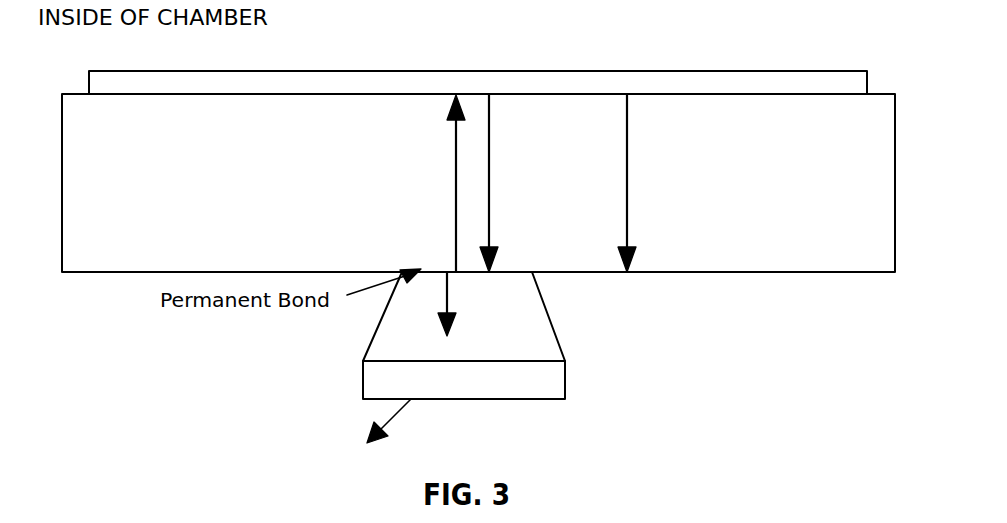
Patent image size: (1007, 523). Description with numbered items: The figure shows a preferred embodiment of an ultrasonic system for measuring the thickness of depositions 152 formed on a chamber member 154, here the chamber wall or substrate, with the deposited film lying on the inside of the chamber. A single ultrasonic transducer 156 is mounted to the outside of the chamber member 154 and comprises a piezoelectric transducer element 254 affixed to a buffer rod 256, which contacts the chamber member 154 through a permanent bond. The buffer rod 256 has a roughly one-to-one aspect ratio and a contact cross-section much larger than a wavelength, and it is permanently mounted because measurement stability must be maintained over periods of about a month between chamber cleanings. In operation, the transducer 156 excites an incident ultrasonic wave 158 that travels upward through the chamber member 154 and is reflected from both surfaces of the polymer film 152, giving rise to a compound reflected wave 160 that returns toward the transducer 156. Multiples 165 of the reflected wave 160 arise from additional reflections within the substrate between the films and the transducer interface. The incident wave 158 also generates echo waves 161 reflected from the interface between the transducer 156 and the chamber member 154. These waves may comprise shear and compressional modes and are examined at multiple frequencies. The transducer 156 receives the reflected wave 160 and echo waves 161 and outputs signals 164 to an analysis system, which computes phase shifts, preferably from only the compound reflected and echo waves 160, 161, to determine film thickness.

The depositions 152 is at (843, 69).
The chamber member 154 is at (260, 213).
The ultrasonic transducer 156 is at (440, 359).
The incident ultrasonic wave 158 is at (433, 183).
The compound reflected wave 160 is at (507, 183).
The echo waves 161 is at (465, 304).
The signals 164 is at (361, 427).
The multiples 165 is at (647, 183).
The buffer rod 256 is at (547, 303).
The transducer element 254 is at (552, 382).